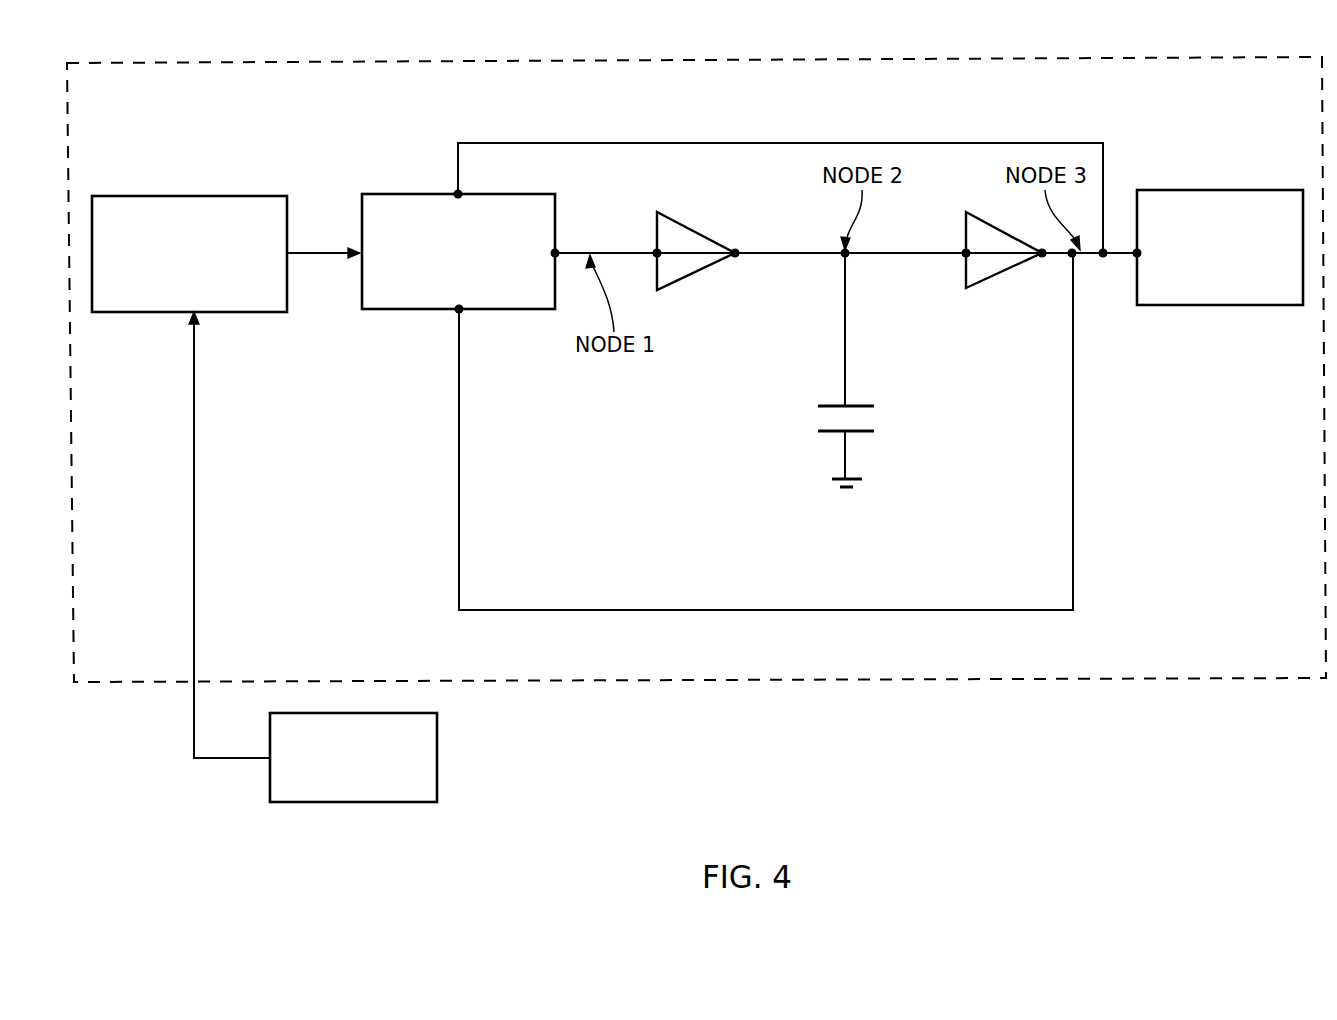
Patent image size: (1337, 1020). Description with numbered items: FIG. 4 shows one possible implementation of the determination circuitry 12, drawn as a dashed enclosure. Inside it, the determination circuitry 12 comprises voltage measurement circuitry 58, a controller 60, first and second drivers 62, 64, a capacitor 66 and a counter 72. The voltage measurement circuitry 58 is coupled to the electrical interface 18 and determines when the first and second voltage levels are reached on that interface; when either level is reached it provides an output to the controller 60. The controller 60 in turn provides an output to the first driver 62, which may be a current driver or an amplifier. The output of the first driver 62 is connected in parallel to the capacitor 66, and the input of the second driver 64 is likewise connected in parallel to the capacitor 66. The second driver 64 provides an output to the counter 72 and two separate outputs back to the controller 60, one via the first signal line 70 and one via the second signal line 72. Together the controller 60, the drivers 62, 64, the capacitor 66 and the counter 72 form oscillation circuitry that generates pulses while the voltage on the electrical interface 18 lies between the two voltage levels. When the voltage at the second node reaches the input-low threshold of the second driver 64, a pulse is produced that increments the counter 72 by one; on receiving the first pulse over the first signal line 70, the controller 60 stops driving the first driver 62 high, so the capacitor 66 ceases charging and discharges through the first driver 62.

The determination circuitry 12 is at (1168, 679).
The electrical interface 18 is at (355, 802).
The voltage measurement circuitry 58 is at (190, 196).
The controller 60 is at (393, 194).
The first driver 62 is at (693, 272).
The second driver 64 is at (1003, 272).
The capacitor 66 is at (896, 448).
The first signal line 70 is at (760, 143).
The counter 72 is at (933, 610).